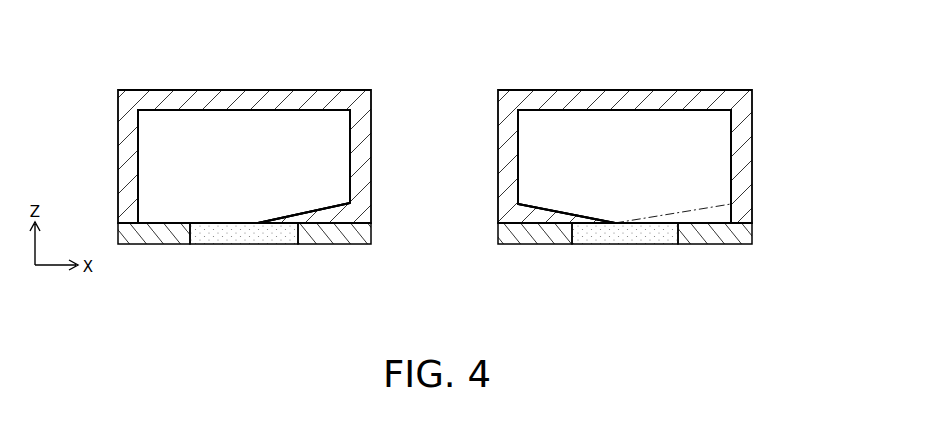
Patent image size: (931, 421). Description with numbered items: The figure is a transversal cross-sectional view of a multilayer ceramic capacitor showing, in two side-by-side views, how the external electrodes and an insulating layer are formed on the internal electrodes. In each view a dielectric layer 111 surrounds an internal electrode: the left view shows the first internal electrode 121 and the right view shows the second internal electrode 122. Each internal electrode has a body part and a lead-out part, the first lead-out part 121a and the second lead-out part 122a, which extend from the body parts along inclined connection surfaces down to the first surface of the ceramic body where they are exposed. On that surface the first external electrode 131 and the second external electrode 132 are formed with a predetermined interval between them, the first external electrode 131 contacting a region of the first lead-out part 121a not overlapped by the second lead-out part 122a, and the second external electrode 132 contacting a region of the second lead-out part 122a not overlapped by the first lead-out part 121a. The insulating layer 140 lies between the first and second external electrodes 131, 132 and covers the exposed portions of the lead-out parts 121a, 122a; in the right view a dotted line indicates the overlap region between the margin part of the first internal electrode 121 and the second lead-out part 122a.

The dielectric layer 111 is at (303, 92).
The first internal electrode 121 is at (340, 148).
The first lead-out part 121a is at (200, 217).
The second internal electrode 122 is at (720, 148).
The second lead-out part 122a is at (688, 217).
The first external electrode 131 is at (140, 243).
The second external electrode 132 is at (348, 243).
The insulating layer 140 is at (265, 243).